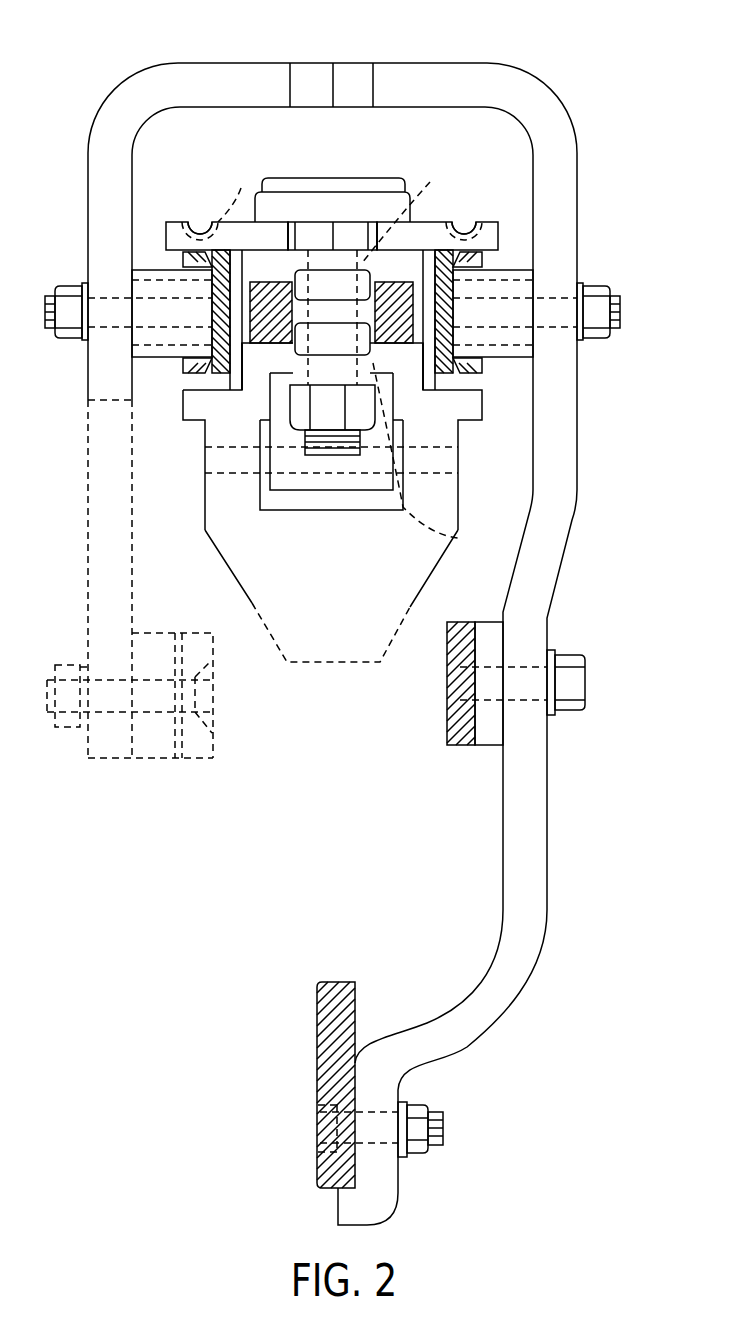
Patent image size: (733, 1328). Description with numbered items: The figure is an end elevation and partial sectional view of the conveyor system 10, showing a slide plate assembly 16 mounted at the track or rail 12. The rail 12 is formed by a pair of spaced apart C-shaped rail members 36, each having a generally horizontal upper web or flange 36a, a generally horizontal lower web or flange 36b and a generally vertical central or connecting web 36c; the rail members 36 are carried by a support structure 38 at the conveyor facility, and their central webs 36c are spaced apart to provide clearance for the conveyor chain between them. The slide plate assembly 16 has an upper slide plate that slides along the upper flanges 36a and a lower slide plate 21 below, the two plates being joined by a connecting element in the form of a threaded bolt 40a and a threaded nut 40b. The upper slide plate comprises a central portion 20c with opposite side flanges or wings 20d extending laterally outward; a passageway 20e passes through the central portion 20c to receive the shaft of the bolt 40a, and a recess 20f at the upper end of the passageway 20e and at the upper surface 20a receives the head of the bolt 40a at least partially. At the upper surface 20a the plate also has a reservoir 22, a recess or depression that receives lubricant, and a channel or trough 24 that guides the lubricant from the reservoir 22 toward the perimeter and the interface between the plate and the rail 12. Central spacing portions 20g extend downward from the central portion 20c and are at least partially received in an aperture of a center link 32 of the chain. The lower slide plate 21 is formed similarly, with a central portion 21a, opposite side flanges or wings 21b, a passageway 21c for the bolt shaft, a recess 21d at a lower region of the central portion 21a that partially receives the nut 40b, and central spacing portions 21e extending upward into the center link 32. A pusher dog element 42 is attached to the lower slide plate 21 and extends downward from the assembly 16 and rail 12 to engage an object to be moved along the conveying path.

The conveyor system 10 is at (100, 69).
The track or rail 12 is at (496, 385).
The slide plate assembly 16 is at (365, 172).
The upper surface 20a is at (187, 221).
The central portion 20c is at (265, 243).
The side flanges or wings 20d is at (494, 235).
The passageway 20e is at (432, 183).
The recess 20f is at (290, 240).
The central spacing portions 20g is at (345, 287).
The lower slide plate 21 is at (415, 401).
The central portion 21a is at (288, 363).
The side flanges or wings 21b is at (202, 410).
The passageway 21c is at (462, 540).
The recess 21d is at (280, 402).
The central spacing portions 21e is at (337, 353).
The reservoir 22 is at (235, 191).
The channel or trough 24 is at (200, 228).
The center link 32 is at (263, 297).
The rail members 36 is at (160, 257).
The upper web or flange 36a is at (212, 266).
The lower web or flange 36b is at (192, 373).
The central or connecting web 36c is at (213, 281).
The support structure 38 is at (556, 89).
The threaded bolt 40a is at (350, 228).
The threaded nut 40b is at (298, 412).
The pusher dog element 42 is at (312, 648).